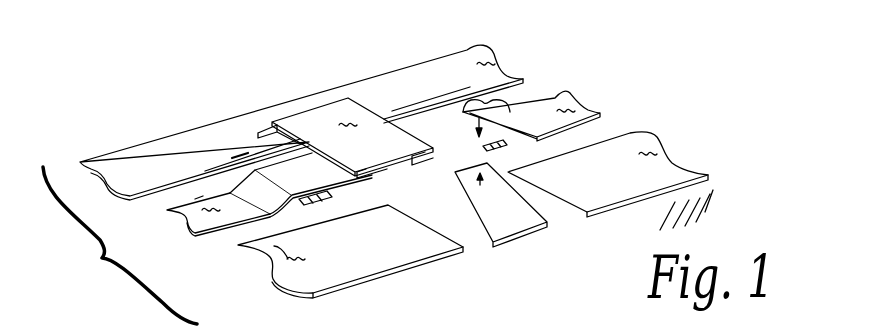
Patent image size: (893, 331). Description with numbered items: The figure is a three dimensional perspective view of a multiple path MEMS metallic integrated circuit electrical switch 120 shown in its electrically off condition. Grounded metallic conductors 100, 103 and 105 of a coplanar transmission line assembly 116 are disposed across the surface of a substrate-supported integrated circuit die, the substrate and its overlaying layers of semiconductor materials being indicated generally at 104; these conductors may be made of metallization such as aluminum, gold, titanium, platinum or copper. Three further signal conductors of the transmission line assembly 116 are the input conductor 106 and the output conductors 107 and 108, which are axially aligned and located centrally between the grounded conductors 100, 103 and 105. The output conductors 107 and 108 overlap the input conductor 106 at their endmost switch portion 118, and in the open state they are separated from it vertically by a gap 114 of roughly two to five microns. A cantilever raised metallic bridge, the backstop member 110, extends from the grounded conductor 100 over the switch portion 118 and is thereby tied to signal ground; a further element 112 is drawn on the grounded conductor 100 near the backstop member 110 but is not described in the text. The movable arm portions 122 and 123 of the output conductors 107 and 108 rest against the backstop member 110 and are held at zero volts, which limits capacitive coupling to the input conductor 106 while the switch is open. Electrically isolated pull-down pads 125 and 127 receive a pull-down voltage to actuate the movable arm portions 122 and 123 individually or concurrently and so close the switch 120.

The grounded metallic conductor 100 is at (495, 64).
The grounded metallic conductor 103 is at (268, 262).
The substrate and overlaying multiple layers of semiconductor materials 104 is at (704, 198).
The grounded metallic conductor 105 is at (648, 152).
The input conductor 106 is at (520, 228).
The output conductor 107 is at (565, 108).
The output conductor 108 is at (167, 214).
The backstop member 110 is at (347, 118).
The conductor trace 112 is at (246, 152).
The gap 114 is at (479, 118).
The transmission line assembly 116 is at (120, 245).
The switch portion 118 is at (400, 184).
The switch 120 is at (284, 78).
The movable arm portion 122 is at (195, 198).
The movable arm portion 123 is at (483, 100).
The pull-down pad 125 is at (250, 220).
The pull-down pad 127 is at (492, 158).